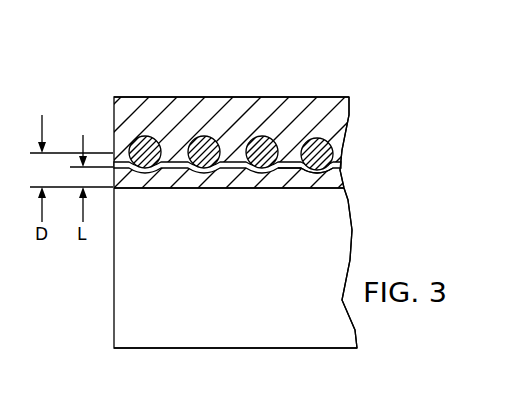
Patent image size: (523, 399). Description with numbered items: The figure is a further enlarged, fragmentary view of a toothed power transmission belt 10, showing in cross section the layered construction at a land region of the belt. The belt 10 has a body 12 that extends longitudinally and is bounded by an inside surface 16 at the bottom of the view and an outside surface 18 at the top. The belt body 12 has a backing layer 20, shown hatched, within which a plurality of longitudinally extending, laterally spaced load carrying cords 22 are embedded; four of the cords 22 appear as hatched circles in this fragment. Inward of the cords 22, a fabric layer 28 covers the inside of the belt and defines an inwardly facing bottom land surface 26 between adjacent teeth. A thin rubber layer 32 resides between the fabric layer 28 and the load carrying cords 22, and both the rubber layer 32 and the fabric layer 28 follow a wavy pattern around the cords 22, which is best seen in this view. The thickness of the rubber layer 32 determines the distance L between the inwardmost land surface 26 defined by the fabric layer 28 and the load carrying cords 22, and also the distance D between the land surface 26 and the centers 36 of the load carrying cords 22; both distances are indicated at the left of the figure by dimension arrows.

The toothed power transmission belt 10 is at (383, 194).
The belt body 12 is at (110, 276).
The inside surface 16 is at (267, 348).
The outside surface 18 is at (263, 97).
The backing layer 20 is at (113, 117).
The load carrying cords 22 is at (274, 138).
The bottom land surface 26 is at (230, 188).
The fabric layer 28 is at (295, 188).
The thin rubber layer 32 is at (328, 168).
The centers of the load carrying cords 36 is at (156, 140).